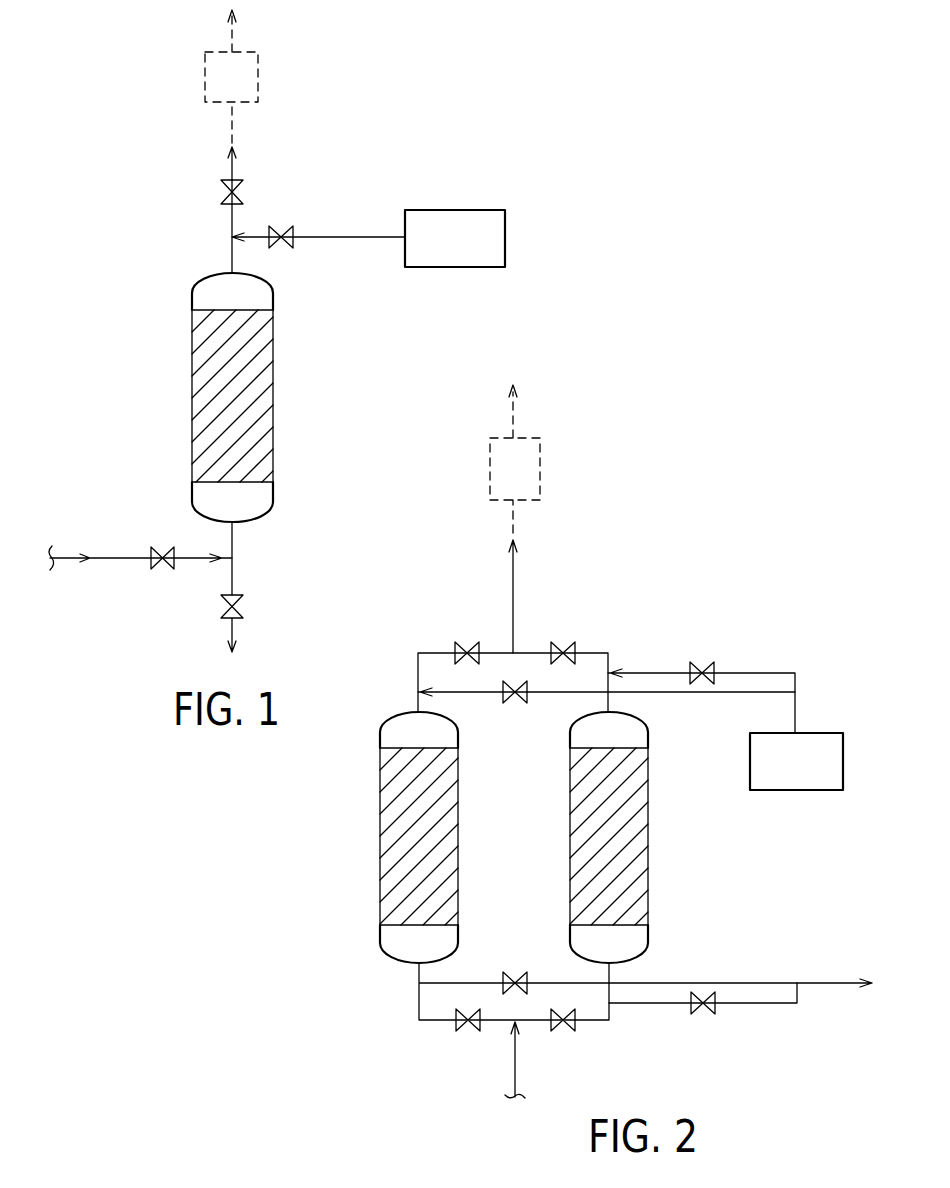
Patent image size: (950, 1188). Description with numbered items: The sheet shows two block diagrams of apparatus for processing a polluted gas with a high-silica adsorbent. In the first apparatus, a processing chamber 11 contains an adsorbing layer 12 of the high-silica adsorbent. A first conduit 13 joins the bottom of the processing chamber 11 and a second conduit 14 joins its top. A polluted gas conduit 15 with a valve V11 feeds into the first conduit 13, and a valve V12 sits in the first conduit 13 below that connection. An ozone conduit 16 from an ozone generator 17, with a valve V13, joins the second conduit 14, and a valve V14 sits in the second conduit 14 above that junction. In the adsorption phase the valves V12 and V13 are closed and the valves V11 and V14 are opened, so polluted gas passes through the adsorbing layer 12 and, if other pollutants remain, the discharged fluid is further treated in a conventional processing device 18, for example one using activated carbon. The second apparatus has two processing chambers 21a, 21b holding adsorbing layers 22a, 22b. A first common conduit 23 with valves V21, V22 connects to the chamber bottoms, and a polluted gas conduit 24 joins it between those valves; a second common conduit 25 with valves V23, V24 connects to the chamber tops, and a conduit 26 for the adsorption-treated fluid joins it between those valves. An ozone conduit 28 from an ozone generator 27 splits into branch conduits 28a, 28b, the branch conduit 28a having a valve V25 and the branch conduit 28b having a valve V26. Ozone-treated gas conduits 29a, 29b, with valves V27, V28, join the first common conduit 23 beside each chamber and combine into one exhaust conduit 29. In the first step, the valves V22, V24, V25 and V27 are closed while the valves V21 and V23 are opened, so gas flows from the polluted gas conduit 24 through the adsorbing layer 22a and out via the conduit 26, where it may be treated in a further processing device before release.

In FIG. 1, the processing chamber 11 is at (192, 398).
In FIG. 1, the adsorbing layer 12 is at (265, 421).
In FIG. 1, the first conduit 13 is at (232, 568).
In FIG. 1, the second conduit 14 is at (232, 220).
In FIG. 1, the polluted gas conduit 15 is at (200, 560).
In FIG. 1, the ozone conduit 16 is at (348, 237).
In FIG. 1, the ozone generator 17 is at (460, 210).
In FIG. 1, the conventional processing device 18 is at (258, 68).
In FIG. 1, the valve V11 is at (152, 552).
In FIG. 1, the valve V12 is at (243, 607).
In FIG. 1, the valve V13 is at (290, 228).
In FIG. 1, the valve V14 is at (240, 182).
In FIG. 2, the processing chamber 21a is at (458, 782).
In FIG. 2, the processing chamber 21b is at (570, 822).
In FIG. 2, the adsorbing layer 22a is at (446, 862).
In FIG. 2, the adsorbing layer 22b is at (640, 860).
In FIG. 2, the first common conduit 23 is at (419, 1008).
In FIG. 2, the polluted gas conduit 24 is at (515, 1075).
In FIG. 2, the second common conduit 25 is at (418, 662).
In FIG. 2, the conduit 26 is at (513, 566).
In FIG. 2, the ozone generator 27 is at (790, 790).
In FIG. 2, the ozone conduit 28 is at (540, 468).
In FIG. 2, the branch conduit 28a is at (682, 695).
In FIG. 2, the branch conduit 28b is at (777, 673).
In FIG. 2, the exhaust conduit 29 is at (812, 983).
In FIG. 2, the ozone-treated gas conduit 29a is at (676, 983).
In FIG. 2, the ozone-treated gas conduit 29b is at (780, 1003).
In FIG. 2, the valve V21 is at (467, 1030).
In FIG. 2, the valve V22 is at (572, 1028).
In FIG. 2, the valve V23 is at (465, 643).
In FIG. 2, the valve V24 is at (568, 643).
In FIG. 2, the valve V25 is at (513, 703).
In FIG. 2, the valve V26 is at (700, 663).
In FIG. 2, the valve V27 is at (513, 975).
In FIG. 2, the valve V28 is at (703, 1013).